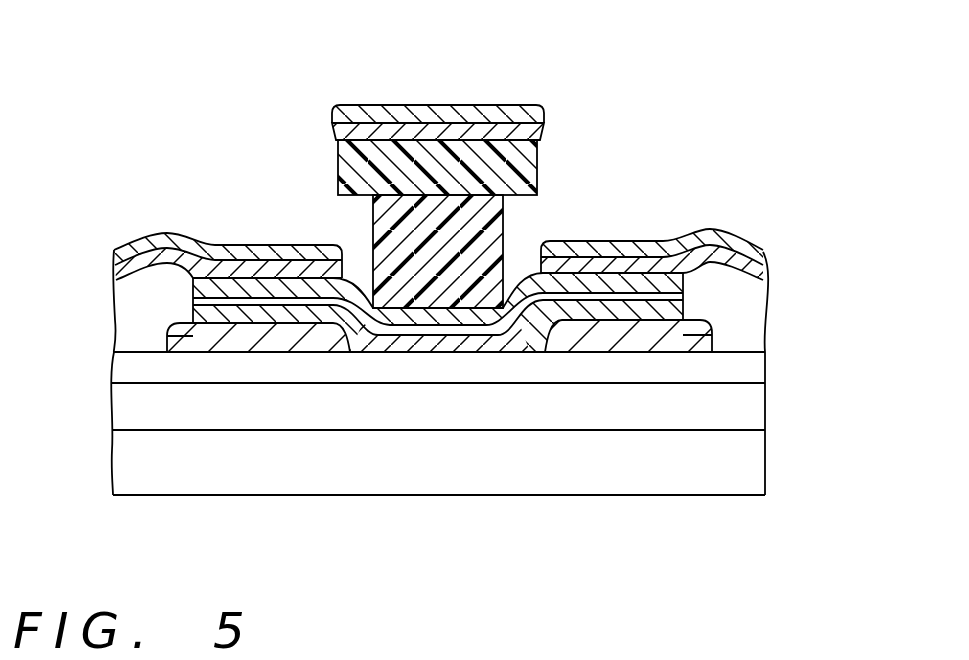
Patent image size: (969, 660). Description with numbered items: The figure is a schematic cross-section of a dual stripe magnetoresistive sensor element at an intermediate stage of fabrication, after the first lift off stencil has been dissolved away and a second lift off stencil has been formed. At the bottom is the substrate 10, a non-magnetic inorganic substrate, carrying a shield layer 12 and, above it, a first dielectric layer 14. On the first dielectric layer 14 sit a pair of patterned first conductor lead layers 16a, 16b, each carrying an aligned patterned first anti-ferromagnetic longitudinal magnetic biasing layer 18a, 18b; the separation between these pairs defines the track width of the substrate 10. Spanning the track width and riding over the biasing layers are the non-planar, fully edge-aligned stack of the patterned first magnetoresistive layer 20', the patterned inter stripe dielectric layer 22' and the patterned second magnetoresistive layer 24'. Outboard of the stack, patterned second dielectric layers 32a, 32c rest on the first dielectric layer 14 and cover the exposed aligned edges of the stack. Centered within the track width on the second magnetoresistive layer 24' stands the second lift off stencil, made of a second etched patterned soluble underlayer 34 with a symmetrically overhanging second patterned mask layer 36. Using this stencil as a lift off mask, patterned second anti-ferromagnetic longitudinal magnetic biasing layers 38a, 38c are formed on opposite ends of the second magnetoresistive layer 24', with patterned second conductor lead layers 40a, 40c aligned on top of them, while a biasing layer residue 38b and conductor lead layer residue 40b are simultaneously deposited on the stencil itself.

The substrate 10 is at (130, 468).
The shield layer 12 is at (130, 410).
The first dielectric layer 14 is at (133, 370).
The patterned first conductor lead layer 16a is at (200, 340).
The patterned first conductor lead layer 16b is at (647, 340).
The patterned first anti-ferromagnetic longitudinal magnetic biasing layer 18a is at (272, 328).
The patterned first anti-ferromagnetic longitudinal magnetic biasing layer 18b is at (580, 328).
The patterned first magnetoresistive layer 20' is at (438, 434).
The patterned inter stripe dielectric layer 22' is at (438, 431).
The patterned second magnetoresistive layer 24' is at (438, 421).
The patterned second dielectric layer 32a is at (133, 327).
The patterned second dielectric layer 32c is at (757, 313).
The second etched patterned soluble underlayer 34 is at (372, 218).
The second patterned mask layer 36 is at (411, 168).
The patterned second anti-ferromagnetic longitudinal magnetic biasing layer 38a is at (113, 275).
The patterned second anti-ferromagnetic longitudinal magnetic biasing layer residue 38b is at (463, 120).
The patterned second anti-ferromagnetic longitudinal magnetic biasing layer 38c is at (763, 275).
The patterned second conductor lead layer 40a is at (113, 262).
The patterned second conductor lead layer residue 40b is at (526, 113).
The patterned second conductor lead layer 40c is at (763, 250).